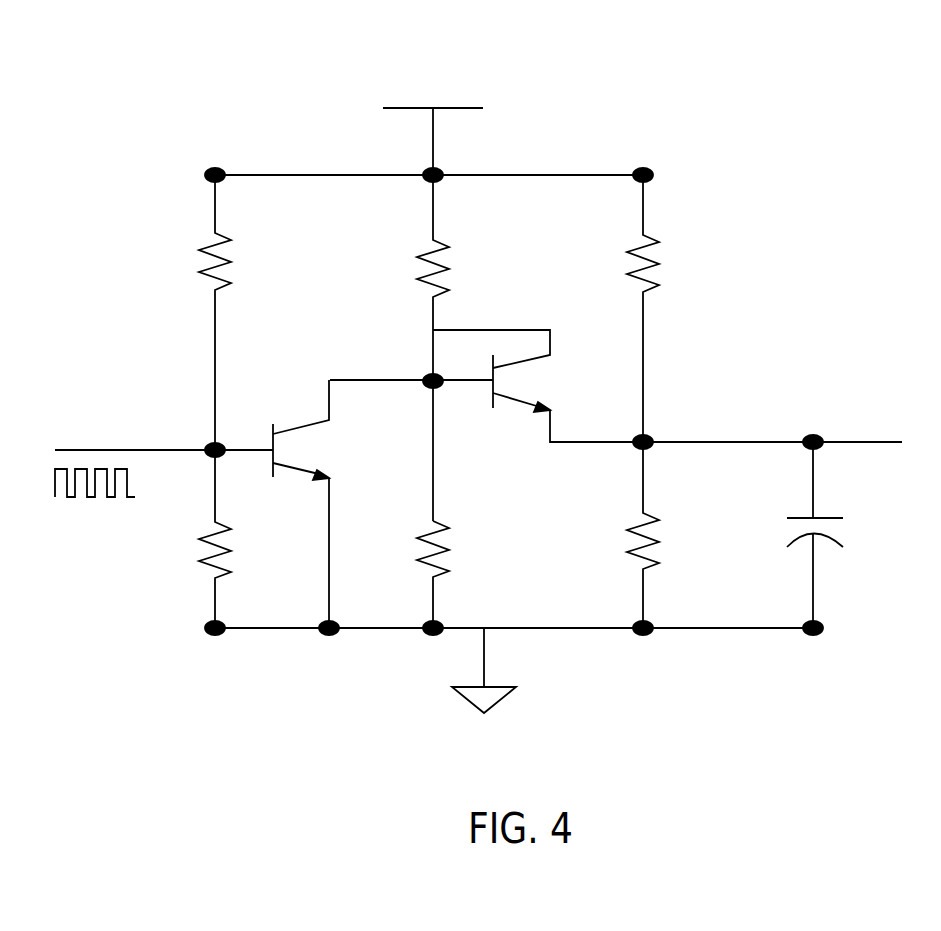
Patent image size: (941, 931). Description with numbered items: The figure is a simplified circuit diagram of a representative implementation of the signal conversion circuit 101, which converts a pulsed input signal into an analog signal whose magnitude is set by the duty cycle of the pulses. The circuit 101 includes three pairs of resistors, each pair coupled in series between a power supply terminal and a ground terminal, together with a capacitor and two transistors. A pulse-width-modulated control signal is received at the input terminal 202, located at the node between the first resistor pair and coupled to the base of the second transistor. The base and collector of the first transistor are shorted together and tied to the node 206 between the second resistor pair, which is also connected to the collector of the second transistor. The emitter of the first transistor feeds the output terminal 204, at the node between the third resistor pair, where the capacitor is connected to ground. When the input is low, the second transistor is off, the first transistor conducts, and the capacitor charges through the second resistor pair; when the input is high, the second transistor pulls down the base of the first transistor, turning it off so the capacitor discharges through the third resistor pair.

The signal conversion circuit 101 is at (780, 114).
The input terminal 202 is at (212, 443).
The output terminal 204 is at (810, 435).
The node 206 is at (429, 376).